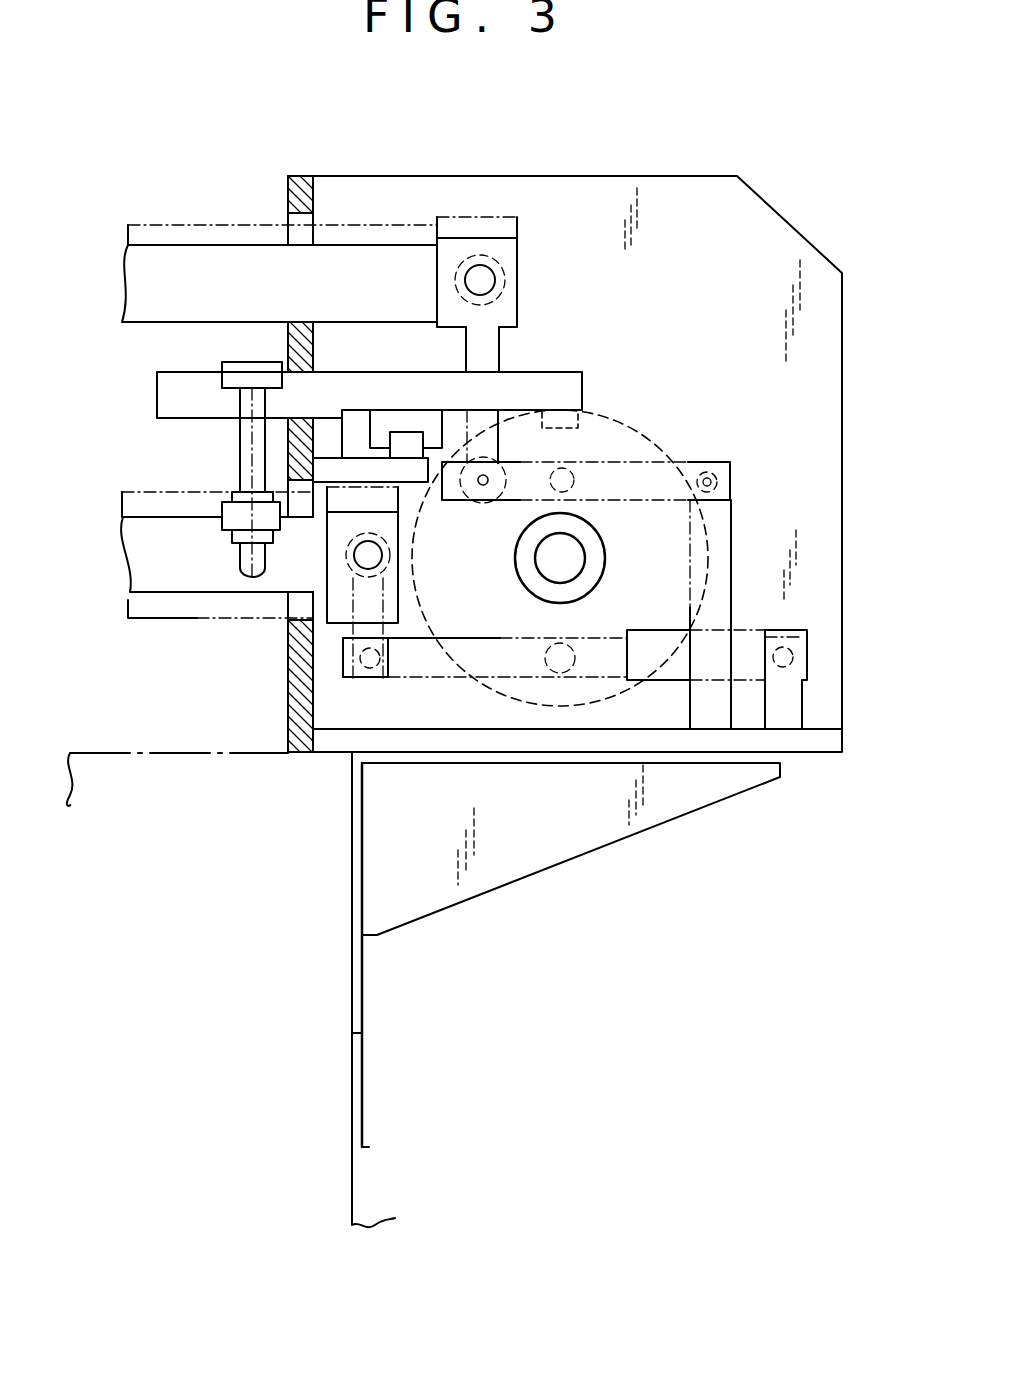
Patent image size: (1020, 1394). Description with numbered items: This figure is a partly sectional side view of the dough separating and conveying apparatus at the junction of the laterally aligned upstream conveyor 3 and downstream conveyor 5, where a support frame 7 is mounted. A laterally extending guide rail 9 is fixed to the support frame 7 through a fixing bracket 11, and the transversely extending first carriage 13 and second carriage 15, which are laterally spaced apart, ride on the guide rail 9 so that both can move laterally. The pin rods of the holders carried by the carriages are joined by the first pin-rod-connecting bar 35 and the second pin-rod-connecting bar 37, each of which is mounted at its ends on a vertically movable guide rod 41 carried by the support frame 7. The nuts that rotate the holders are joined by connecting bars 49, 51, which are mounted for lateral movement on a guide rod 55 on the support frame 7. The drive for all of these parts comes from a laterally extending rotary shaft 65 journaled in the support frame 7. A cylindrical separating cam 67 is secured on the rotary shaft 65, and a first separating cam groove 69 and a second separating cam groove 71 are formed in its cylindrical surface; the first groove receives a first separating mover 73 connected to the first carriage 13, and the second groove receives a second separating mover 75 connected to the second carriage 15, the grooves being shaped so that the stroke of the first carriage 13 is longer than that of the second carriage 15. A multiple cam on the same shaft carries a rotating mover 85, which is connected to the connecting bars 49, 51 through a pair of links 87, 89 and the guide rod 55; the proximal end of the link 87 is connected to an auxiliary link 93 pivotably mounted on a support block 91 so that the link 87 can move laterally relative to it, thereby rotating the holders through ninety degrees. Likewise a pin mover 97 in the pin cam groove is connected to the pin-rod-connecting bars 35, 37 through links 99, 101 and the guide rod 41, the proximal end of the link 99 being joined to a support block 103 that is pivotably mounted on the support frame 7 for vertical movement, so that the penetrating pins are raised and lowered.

The upstream conveyor 3 is at (165, 754).
The downstream conveyor 5 is at (150, 765).
The support frame 7 is at (802, 230).
The guide rail 9 is at (408, 440).
The fixing bracket 11 is at (375, 468).
The first carriage 13 is at (415, 350).
The second carriage 15 is at (552, 370).
The first pin-rod-connecting bar 35 is at (279, 220).
The second pin-rod-connecting bar 37 is at (178, 258).
The guide rod 41 is at (495, 283).
The connecting bar 49 is at (190, 522).
The connecting bar 51 is at (193, 490).
The guide rod 55 is at (330, 568).
The rotary shaft 65 is at (565, 563).
The cylindrical separating cam 67 is at (655, 445).
The first separating cam groove 69 is at (644, 411).
The second separating cam groove 71 is at (558, 418).
The first separating mover 73 is at (644, 393).
The second separating mover 75 is at (644, 393).
The rotating mover 85 is at (557, 660).
The link 87 is at (440, 660).
The link 89 is at (358, 607).
The support block 91 is at (795, 700).
The auxiliary link 93 is at (668, 683).
The pin mover 97 is at (548, 485).
The link 99 is at (600, 490).
The link 101 is at (500, 362).
The support block 103 is at (732, 588).